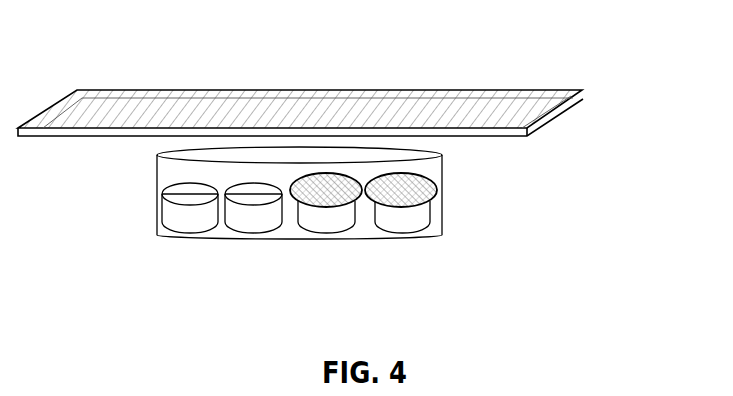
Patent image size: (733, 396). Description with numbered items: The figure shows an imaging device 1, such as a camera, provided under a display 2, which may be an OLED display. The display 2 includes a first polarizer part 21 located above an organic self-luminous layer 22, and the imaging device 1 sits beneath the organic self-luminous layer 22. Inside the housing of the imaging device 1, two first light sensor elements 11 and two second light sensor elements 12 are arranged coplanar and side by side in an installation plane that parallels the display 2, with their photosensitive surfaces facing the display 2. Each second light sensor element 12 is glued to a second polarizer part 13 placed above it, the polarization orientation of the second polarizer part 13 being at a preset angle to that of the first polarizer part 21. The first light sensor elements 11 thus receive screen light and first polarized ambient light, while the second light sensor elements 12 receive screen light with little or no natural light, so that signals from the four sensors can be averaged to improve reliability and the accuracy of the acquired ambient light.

The imaging device 1 is at (433, 165).
The display 2 is at (354, 77).
The first polarizer part 21 is at (582, 91).
The organic self-luminous layer 22 is at (583, 100).
The first light sensor element 11 is at (198, 220).
The second light sensor element 12 is at (345, 222).
The second polarizer part 13 is at (335, 178).